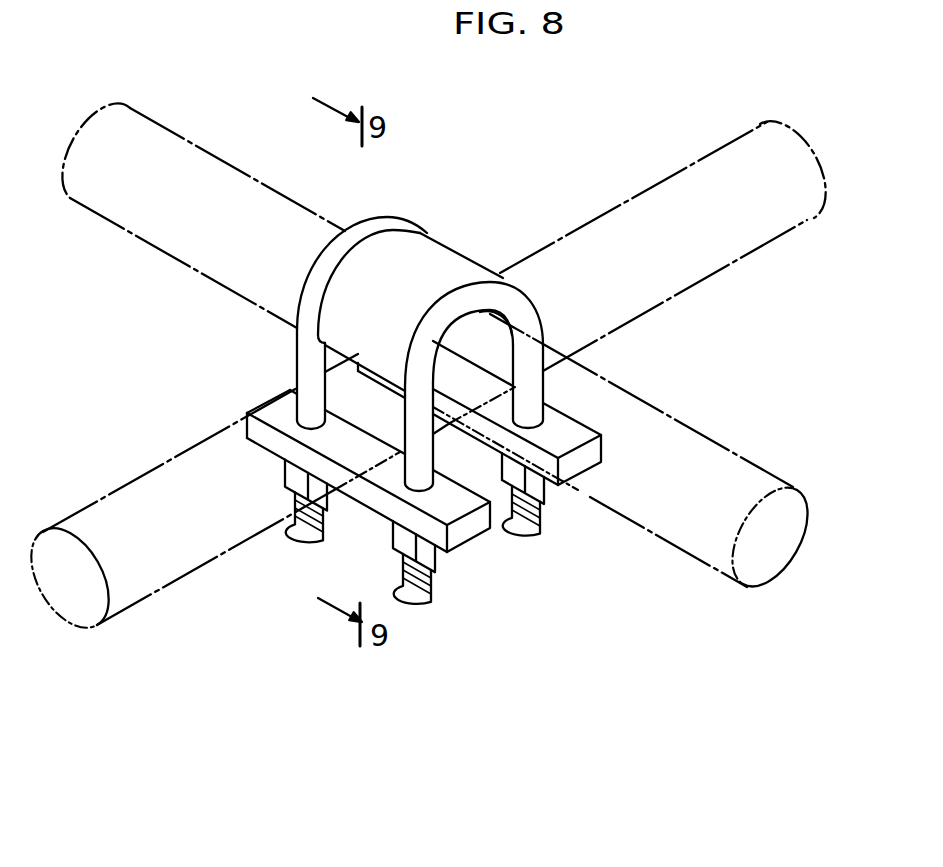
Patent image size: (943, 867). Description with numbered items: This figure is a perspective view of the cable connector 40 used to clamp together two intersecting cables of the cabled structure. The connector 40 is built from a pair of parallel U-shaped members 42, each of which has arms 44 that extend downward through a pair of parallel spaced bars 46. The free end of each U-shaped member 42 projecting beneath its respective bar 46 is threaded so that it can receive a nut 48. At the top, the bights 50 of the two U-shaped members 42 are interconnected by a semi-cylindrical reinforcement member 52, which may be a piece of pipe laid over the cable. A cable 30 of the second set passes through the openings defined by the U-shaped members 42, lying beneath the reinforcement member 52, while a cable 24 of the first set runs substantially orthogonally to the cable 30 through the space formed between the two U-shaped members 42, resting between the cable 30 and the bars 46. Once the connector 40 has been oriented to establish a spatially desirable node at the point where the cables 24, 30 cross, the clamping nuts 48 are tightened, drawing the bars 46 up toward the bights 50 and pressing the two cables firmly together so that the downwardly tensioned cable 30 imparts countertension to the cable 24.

The cable of the first set 24 is at (693, 188).
The cable of the second set 30 is at (171, 156).
The cable connector 40 is at (624, 592).
The U-shaped member 42 is at (297, 353).
The arm 44 is at (548, 406).
The bar 46 is at (481, 532).
The nut 48 is at (302, 486).
The bight 50 is at (493, 297).
The semi-cylindrical reinforcement member 52 is at (412, 257).